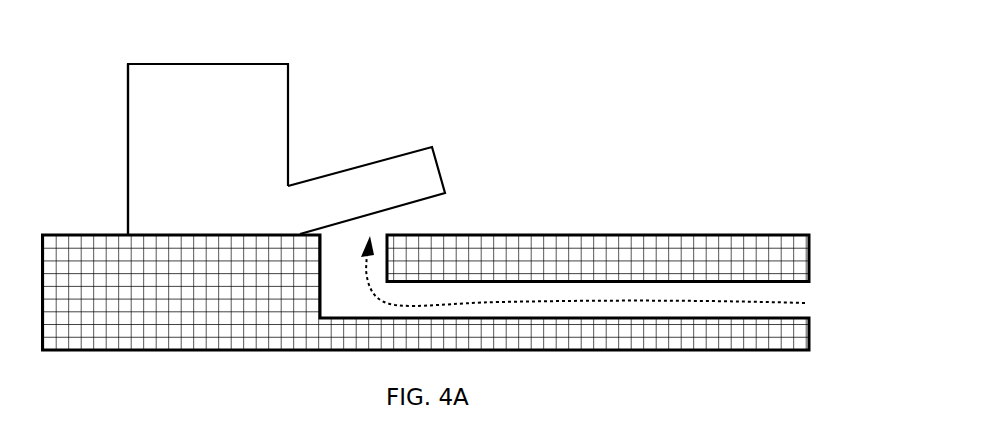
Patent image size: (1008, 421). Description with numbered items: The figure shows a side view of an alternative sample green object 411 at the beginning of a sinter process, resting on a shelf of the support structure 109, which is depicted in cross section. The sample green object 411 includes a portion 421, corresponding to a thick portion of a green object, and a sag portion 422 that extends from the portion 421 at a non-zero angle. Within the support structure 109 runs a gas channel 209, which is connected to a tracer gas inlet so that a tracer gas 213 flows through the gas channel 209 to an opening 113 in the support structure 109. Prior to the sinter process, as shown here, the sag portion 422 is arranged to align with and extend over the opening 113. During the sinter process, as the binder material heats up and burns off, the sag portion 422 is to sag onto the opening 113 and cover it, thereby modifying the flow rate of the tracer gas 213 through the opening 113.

The support structure 109 is at (682, 248).
The opening 113 is at (394, 226).
The gas channel 209 is at (364, 313).
The tracer gas 213 is at (793, 307).
The sample green object 411 is at (130, 143).
The portion 421 is at (204, 136).
The sag portion 422 is at (352, 211).